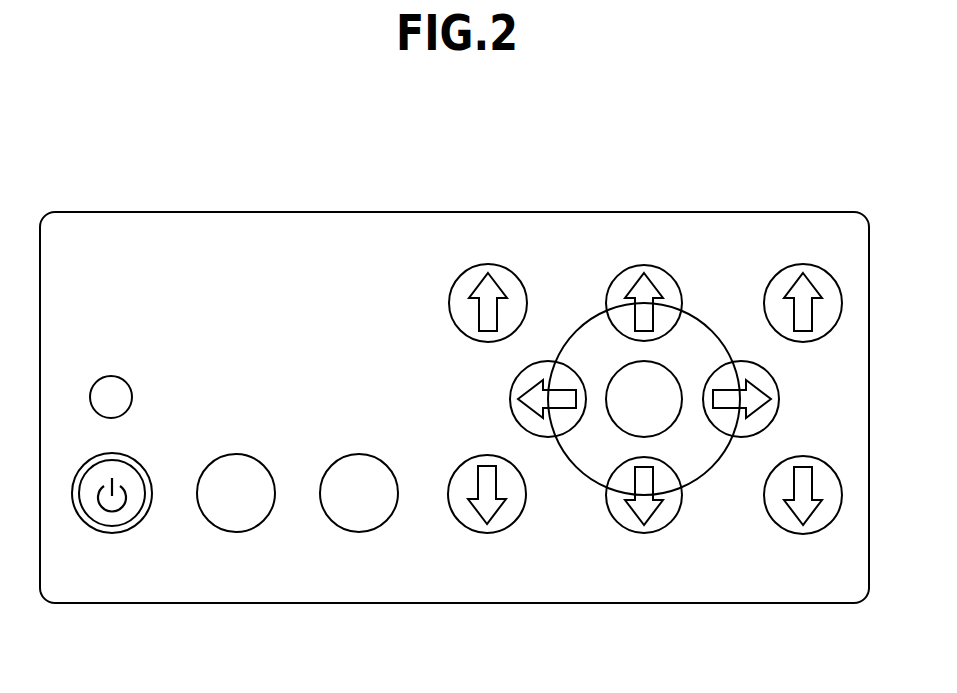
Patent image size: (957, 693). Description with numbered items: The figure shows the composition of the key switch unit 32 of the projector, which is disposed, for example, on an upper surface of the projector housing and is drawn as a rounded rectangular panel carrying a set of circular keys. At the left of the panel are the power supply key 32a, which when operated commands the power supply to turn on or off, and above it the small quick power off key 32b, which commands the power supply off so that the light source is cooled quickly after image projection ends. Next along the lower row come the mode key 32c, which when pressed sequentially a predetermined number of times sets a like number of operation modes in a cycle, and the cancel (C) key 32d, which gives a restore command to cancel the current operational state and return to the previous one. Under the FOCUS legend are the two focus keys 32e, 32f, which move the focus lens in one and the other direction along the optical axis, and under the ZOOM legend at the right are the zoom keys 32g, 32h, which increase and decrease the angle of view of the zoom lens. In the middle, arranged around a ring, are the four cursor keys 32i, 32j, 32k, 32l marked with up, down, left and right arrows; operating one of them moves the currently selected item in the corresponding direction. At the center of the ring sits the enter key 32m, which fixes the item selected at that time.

The key switch unit 32 is at (673, 202).
The power supply key 32a is at (112, 533).
The quick power off key 32b is at (132, 397).
The mode key 32c is at (237, 532).
The cancel (C) key 32d is at (359, 532).
The focus key 32e is at (449, 303).
The focus key 32f is at (487, 533).
The zoom key 32g is at (765, 301).
The zoom key 32h is at (803, 534).
The cursor key (up) 32i is at (608, 294).
The cursor key (down) 32j is at (643, 533).
The cursor key (left) 32k is at (542, 437).
The cursor key (right) 32l is at (748, 437).
The enter key 32m is at (677, 422).